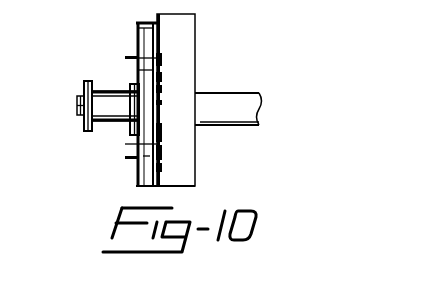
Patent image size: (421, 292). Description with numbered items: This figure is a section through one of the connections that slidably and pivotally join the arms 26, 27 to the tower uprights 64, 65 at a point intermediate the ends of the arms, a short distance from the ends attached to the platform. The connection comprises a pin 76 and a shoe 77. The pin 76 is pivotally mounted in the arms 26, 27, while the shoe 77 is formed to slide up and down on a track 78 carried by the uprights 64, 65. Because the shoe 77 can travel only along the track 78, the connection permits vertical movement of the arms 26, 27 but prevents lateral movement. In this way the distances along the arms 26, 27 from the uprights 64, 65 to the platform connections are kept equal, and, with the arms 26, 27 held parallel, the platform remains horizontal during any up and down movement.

The arm 26 is at (97, 90).
The arm 27 is at (112, 90).
The upright 64 is at (220, 100).
The upright 65 is at (197, 71).
The pin 76 is at (77, 118).
The shoe 77 is at (136, 141).
The track 78 is at (138, 176).